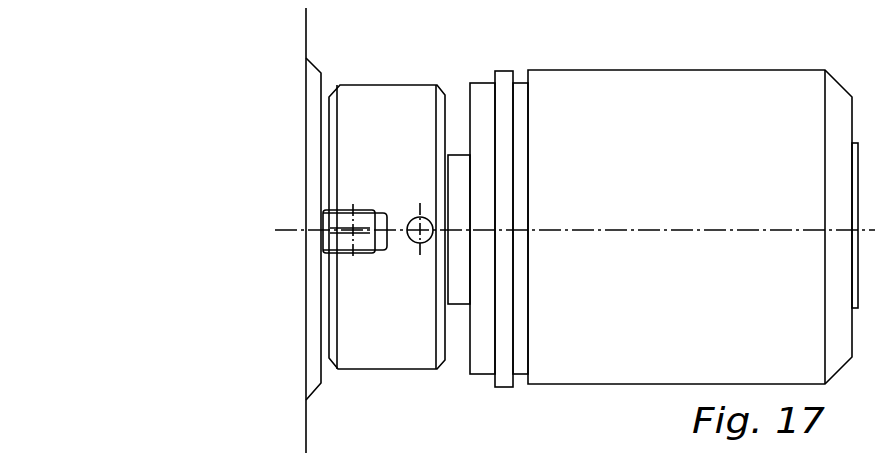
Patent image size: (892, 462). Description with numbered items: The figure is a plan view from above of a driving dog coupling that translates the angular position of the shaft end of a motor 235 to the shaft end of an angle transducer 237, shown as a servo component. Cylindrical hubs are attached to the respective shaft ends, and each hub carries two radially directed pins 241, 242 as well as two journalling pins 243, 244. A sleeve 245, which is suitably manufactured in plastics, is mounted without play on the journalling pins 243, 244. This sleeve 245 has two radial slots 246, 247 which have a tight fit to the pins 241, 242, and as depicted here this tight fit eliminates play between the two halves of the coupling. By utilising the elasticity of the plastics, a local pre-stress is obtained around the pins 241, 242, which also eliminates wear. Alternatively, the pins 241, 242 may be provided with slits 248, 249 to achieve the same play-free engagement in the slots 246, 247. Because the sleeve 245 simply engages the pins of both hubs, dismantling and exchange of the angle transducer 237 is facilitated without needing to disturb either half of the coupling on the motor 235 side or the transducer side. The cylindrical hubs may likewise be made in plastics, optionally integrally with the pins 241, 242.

The motor 235 is at (232, 145).
The angle transducer 237 is at (748, 141).
The radially directed pin 241 is at (335, 218).
The radially directed pin 242 is at (206, 231).
The journalling pin 243 is at (418, 238).
The journalling pin 244 is at (239, 318).
The sleeve 245 is at (368, 113).
The radial slot 246 is at (340, 207).
The radial slot 247 is at (223, 194).
The slit 248 is at (343, 236).
The slit 249 is at (214, 287).